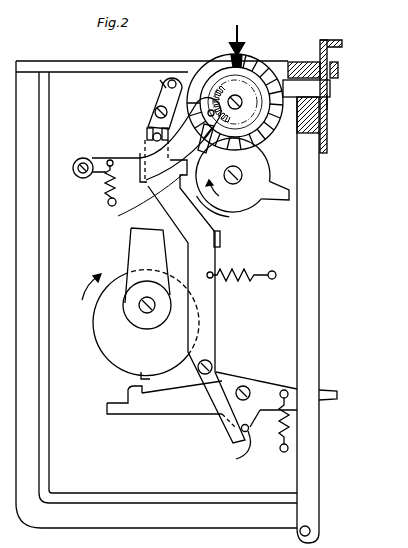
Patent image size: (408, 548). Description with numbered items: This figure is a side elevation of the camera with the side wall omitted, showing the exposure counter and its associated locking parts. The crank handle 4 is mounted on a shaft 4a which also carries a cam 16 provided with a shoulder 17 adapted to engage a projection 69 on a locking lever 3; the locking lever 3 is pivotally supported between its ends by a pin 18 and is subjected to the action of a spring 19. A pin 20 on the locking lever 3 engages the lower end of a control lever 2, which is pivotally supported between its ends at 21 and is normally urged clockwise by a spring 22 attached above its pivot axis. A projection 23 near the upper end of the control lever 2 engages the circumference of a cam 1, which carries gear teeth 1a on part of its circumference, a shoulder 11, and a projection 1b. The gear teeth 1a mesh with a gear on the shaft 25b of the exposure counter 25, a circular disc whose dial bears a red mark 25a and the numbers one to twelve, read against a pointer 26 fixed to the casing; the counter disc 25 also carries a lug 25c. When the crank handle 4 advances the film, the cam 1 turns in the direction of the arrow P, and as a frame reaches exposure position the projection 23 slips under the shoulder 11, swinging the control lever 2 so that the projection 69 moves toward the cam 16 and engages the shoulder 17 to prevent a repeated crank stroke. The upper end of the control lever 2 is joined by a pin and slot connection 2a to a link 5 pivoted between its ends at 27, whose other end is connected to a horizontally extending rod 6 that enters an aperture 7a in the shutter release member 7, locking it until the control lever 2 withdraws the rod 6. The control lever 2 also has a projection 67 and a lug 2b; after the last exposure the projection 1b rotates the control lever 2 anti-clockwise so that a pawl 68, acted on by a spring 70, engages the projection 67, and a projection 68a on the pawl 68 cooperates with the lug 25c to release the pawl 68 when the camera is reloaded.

The cam 1 is at (263, 172).
The gear teeth 1a is at (170, 81).
The projection 1b is at (290, 197).
The control lever 2 is at (214, 258).
The pin and slot connection 2a is at (146, 133).
The lever lug 2b is at (221, 240).
The locking lever 3 is at (167, 408).
The crank handle 4 is at (132, 252).
The shaft 4a is at (148, 313).
The link 5 is at (163, 95).
The rod 6 is at (293, 90).
The shutter release member 7 is at (326, 41).
The aperture 7a is at (326, 103).
The shoulder 11 is at (226, 214).
The cam 16 is at (108, 348).
The shoulder 17 is at (141, 376).
The pin 18 is at (247, 390).
The spring 19 is at (288, 427).
The pin 20 is at (231, 447).
The pivot 21 is at (211, 364).
The spring 22 is at (237, 283).
The projection 23 is at (118, 216).
The exposure counter 25 is at (251, 64).
The mark 25a is at (231, 57).
The shaft 25b is at (209, 110).
The lug 25c is at (214, 152).
The pointer 26 is at (242, 33).
The pivot 27 is at (154, 112).
The projection 67 is at (114, 197).
The pawl 68 is at (97, 157).
The projection 68a is at (162, 79).
The projection 69 is at (133, 405).
The spring 70 is at (103, 188).